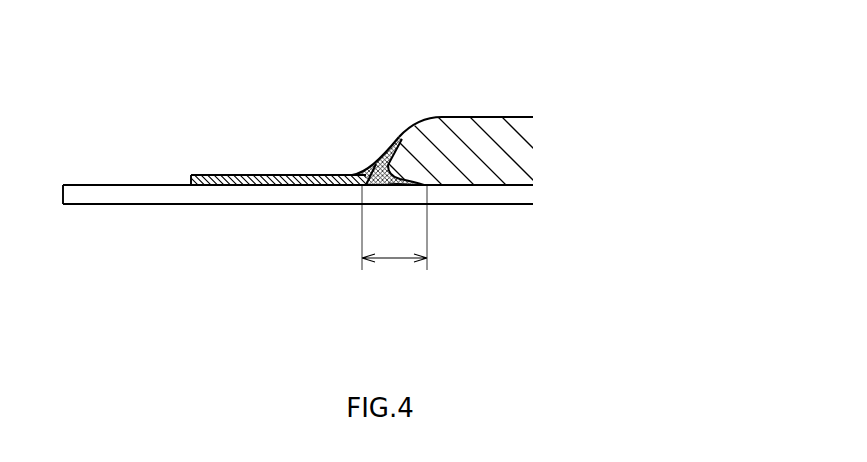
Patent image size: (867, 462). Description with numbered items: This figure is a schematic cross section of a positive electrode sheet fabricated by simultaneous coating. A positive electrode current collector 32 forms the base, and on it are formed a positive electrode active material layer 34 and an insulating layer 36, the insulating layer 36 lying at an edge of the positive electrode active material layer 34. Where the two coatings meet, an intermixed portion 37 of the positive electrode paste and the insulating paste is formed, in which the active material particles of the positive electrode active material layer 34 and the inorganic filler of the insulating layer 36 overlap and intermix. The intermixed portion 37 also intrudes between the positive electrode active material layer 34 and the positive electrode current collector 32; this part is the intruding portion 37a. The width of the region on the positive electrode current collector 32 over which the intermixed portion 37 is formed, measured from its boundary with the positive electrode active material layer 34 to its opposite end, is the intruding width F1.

The positive electrode current collector 32 is at (105, 205).
The positive electrode active material layer 34 is at (490, 117).
The insulating layer 36 is at (226, 175).
The intermixed portion 37 is at (390, 129).
The intruding portion 37a is at (406, 199).
The intruding width F1 is at (394, 240).